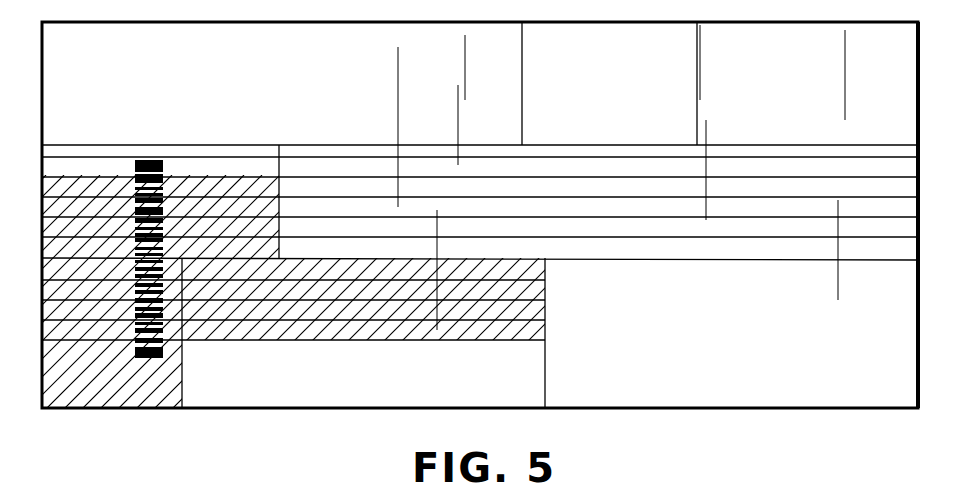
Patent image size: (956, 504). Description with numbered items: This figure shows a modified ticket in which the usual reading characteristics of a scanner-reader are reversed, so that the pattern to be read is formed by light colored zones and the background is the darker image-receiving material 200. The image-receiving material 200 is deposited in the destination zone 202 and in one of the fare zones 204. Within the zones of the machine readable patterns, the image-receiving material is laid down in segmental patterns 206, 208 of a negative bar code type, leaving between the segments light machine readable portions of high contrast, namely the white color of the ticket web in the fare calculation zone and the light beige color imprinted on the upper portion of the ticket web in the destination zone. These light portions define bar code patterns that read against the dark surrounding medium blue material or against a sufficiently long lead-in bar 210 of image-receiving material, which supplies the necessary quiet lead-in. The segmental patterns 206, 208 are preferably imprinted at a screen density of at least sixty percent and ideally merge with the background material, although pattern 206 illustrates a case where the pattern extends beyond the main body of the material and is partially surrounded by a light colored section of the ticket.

The image-receiving material 200 is at (50, 207).
The destination zone 202 is at (228, 177).
The fare zone 204 is at (155, 384).
The segmental pattern 206 is at (163, 228).
The segmental pattern 208 is at (131, 327).
The lead-in bar 210 is at (165, 167).